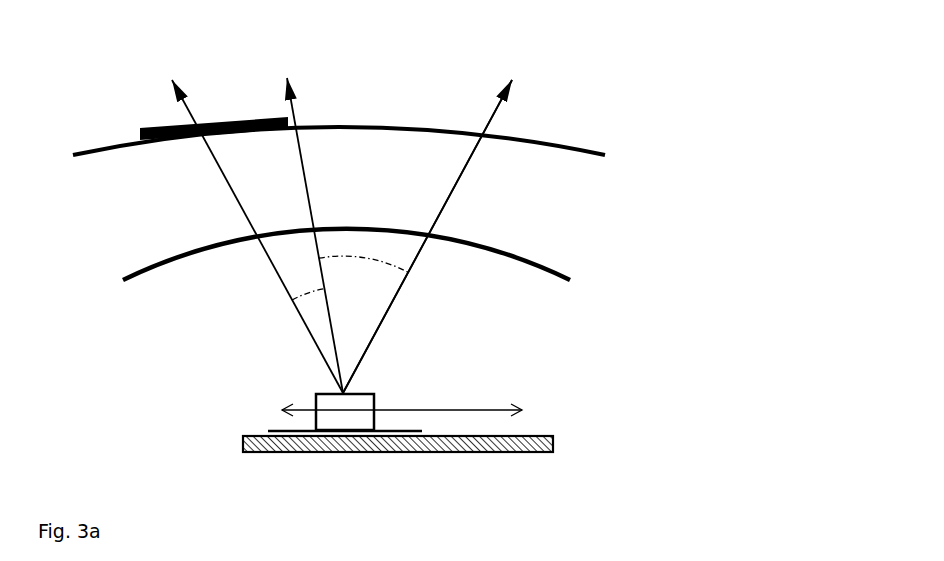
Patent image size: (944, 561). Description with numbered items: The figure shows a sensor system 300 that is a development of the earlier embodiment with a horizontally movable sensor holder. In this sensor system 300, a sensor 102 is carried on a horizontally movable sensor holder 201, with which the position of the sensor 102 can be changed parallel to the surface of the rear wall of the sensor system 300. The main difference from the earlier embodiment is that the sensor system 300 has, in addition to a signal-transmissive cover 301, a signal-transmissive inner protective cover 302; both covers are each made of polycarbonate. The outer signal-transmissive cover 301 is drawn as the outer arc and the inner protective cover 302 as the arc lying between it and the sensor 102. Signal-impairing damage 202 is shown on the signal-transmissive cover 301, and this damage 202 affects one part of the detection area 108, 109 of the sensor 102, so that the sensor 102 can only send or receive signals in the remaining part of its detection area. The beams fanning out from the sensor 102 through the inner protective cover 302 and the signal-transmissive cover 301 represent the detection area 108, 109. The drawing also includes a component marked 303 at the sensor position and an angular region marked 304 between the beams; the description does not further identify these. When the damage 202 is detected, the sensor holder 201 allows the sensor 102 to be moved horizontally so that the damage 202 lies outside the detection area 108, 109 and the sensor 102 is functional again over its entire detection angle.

The sensor system 300 is at (520, 128).
The signal-transmissive cover 301 is at (335, 132).
The signal-transmissive inner protective cover 302 is at (192, 238).
The signal-impairing damage 202 is at (247, 133).
The detection area 108 is at (282, 285).
The second scan angle 304 is at (385, 263).
The detection area 109 is at (422, 250).
The light source / emitter 303 is at (308, 297).
The sensor 102 is at (390, 418).
The horizontally movable sensor holder 201 is at (243, 447).